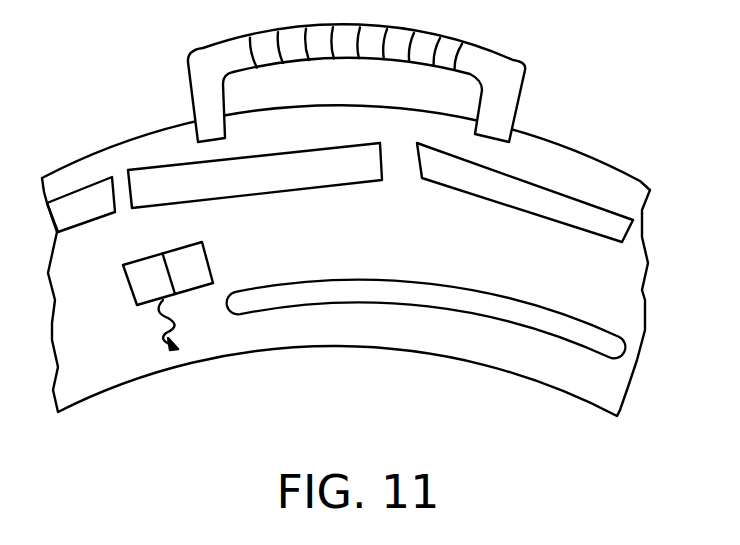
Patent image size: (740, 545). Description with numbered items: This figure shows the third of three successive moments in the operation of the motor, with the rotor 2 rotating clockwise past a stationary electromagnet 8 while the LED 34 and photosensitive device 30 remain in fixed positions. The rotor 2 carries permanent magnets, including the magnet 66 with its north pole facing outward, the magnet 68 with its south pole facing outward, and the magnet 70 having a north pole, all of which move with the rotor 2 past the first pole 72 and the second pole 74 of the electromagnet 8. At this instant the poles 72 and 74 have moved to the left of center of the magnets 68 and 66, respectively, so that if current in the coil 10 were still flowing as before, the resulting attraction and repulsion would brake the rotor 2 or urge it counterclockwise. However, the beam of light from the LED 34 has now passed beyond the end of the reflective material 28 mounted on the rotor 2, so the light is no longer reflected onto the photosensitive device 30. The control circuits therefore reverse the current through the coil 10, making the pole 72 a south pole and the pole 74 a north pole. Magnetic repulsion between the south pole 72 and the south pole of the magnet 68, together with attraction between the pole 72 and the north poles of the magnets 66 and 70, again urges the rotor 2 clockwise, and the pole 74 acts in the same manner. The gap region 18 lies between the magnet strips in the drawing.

The rotor 2 is at (97, 165).
The electromagnet 8 is at (188, 80).
The coil 10 is at (311, 60).
The gap between pole pieces 18 is at (387, 138).
The reflective material 28 is at (426, 301).
The photosensitive device 30 is at (215, 268).
The LED 34 is at (132, 293).
The permanent magnet 66 is at (525, 192).
The permanent magnet 68 is at (292, 190).
The permanent magnet 70 is at (80, 232).
The first pole 72 is at (232, 117).
The second pole 74 is at (466, 113).